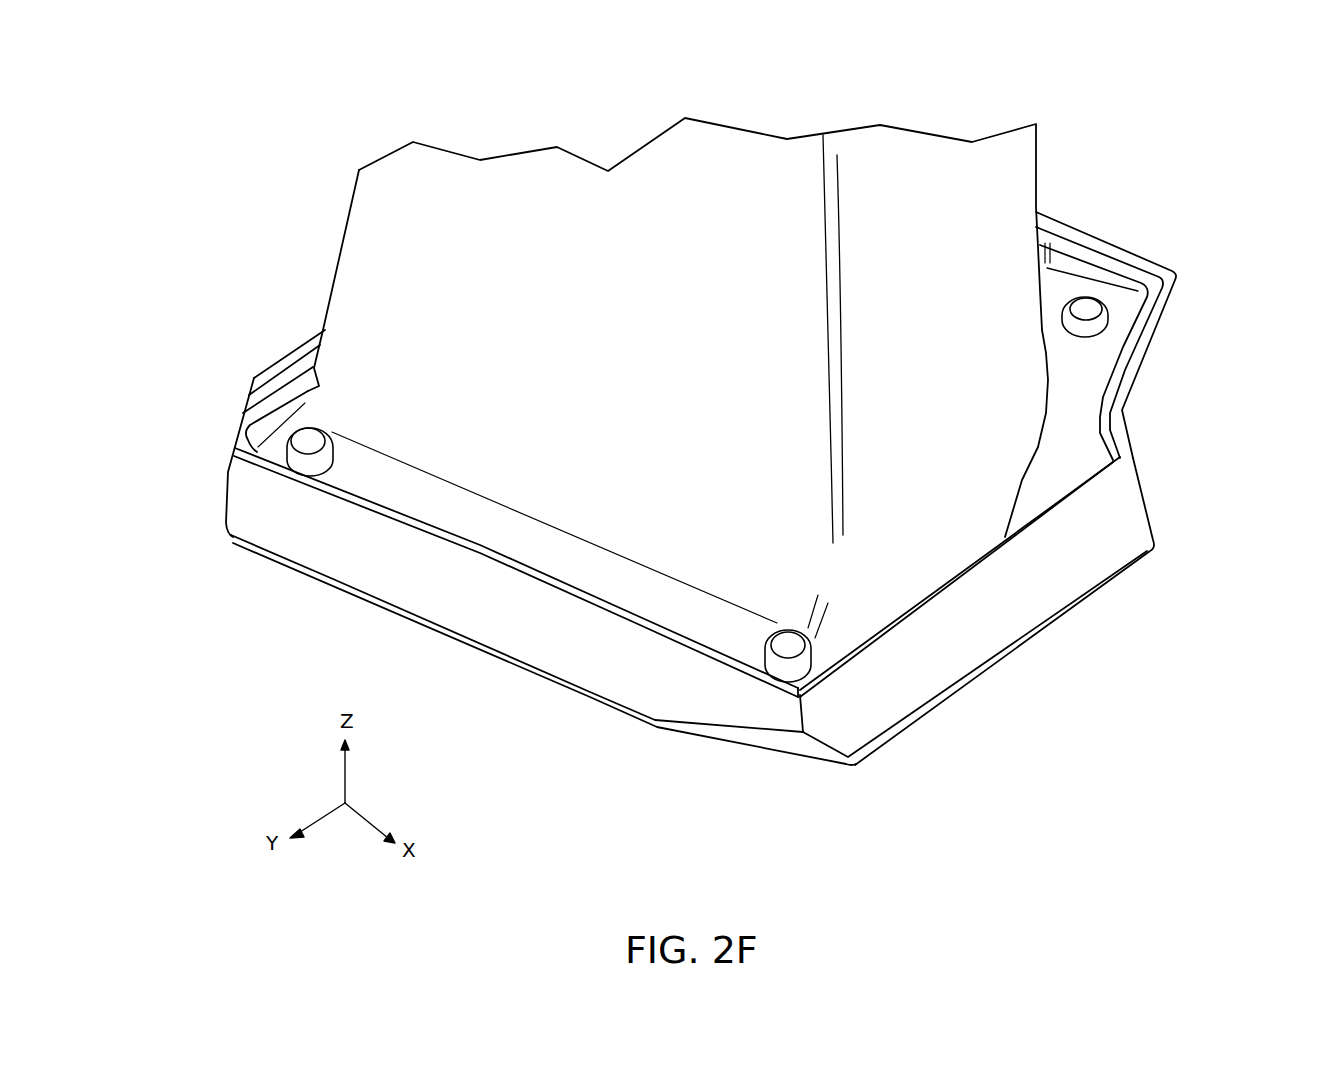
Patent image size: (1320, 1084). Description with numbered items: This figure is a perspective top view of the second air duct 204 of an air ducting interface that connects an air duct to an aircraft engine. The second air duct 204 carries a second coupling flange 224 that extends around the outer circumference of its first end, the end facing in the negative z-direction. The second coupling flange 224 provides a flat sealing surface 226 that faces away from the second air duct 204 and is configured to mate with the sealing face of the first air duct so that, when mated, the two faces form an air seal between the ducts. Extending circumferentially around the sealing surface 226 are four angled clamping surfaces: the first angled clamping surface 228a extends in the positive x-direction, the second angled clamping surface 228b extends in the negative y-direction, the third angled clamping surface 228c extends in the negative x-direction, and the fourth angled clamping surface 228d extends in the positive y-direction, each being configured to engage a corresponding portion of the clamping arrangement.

The second air duct 204 is at (298, 140).
The second coupling flange 224 is at (708, 509).
The sealing surface 226 is at (700, 732).
The first angled clamping surface 228a is at (1125, 553).
The second angled clamping surface 228b is at (1142, 262).
The third angled clamping surface 228c is at (290, 360).
The fourth angled clamping surface 228d is at (400, 588).